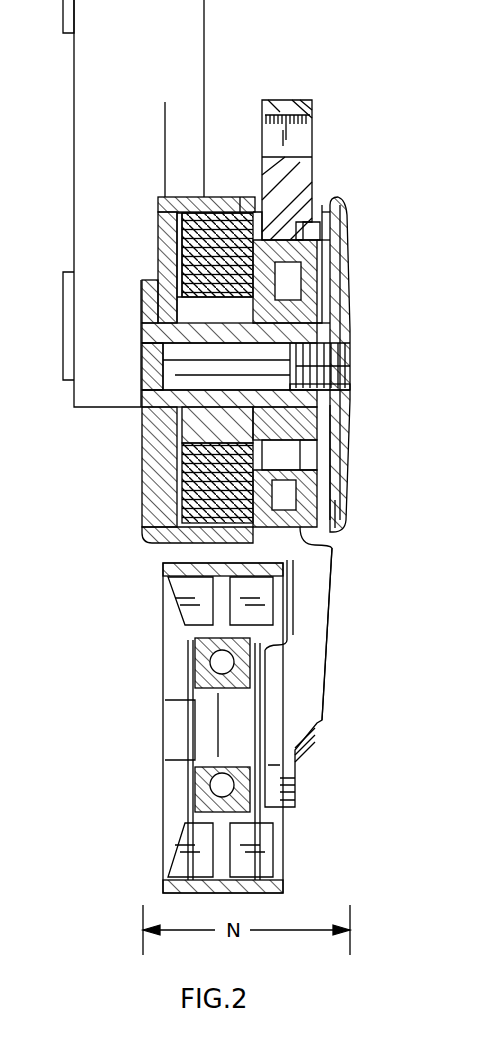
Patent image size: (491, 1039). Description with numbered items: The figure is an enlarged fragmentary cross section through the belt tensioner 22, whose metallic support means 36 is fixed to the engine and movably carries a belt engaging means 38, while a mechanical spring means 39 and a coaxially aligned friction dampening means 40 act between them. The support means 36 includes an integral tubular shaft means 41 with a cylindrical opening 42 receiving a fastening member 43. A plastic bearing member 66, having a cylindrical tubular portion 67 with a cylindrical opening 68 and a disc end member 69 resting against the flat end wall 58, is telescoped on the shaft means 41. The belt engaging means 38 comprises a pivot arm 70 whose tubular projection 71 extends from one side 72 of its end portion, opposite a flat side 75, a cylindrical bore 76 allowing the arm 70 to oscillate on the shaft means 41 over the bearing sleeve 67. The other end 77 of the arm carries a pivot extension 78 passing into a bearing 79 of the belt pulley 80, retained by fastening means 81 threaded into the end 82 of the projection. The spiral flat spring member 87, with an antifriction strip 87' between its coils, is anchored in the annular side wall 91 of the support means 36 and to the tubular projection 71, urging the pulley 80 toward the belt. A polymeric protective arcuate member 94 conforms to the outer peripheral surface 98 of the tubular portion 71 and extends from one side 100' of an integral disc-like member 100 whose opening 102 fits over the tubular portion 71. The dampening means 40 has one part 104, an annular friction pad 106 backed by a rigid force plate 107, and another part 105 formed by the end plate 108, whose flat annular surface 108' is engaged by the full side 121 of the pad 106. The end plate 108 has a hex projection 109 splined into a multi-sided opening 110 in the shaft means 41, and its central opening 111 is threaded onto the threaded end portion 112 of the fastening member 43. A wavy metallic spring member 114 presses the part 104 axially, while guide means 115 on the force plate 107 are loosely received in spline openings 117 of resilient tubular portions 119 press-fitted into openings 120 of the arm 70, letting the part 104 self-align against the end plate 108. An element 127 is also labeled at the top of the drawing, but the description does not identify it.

The belt tensioner 22 is at (360, 200).
The support means 36 is at (90, 60).
The belt engaging means 38 is at (328, 675).
The mechanical spring means 39 is at (162, 502).
The friction dampening means 40 is at (318, 200).
The shaft means 41 is at (350, 300).
The cylindrical opening 42 is at (152, 355).
The fastening member 43 is at (148, 420).
The flat end wall 58 is at (162, 482).
The bearing member 66 is at (162, 452).
The cylindrical tubular portion 67 is at (145, 302).
The cylindrical opening 68 is at (146, 325).
The disc end member 69 is at (152, 538).
The pivot arm 70 is at (332, 617).
The tubular projection 71 is at (156, 280).
The one side 72 is at (262, 142).
The flat side 75 is at (320, 160).
The cylindrical bore 76 is at (214, 343).
The other end 77 is at (322, 715).
The pivot extension 78 is at (215, 768).
The bearing 79 is at (195, 800).
The belt pulley 80 is at (163, 880).
The fastening means 81 is at (170, 720).
The end 82 is at (196, 685).
The spring member 87 is at (186, 185).
The strip of antifriction material 87' is at (141, 256).
The annular side wall 91 is at (212, 196).
The protective arcuate member 94 is at (178, 238).
The outer peripheral surface 98 is at (172, 262).
The disc-like member 100 is at (199, 722).
The one side 100' is at (225, 179).
The opening 102 is at (350, 412).
The one part 104 is at (330, 562).
The other part 105 is at (345, 508).
The annular pad 106 is at (346, 478).
The force plate 107 is at (350, 445).
The end plate 108 is at (397, 462).
The flat annular surface 108' is at (373, 364).
The multi-sided central projection 109 is at (355, 326).
The multi-sided opening 110 is at (355, 387).
The opening 111 is at (352, 350).
The threaded end portion 112 is at (355, 362).
The wavy metallic spring member 114 is at (345, 223).
The spline or guide means 115 is at (347, 244).
The spline openings 117 is at (298, 605).
The tubular portions 119 is at (287, 198).
The openings 120 is at (286, 282).
The full side 121 is at (350, 283).
The bolt head 127 is at (285, 115).